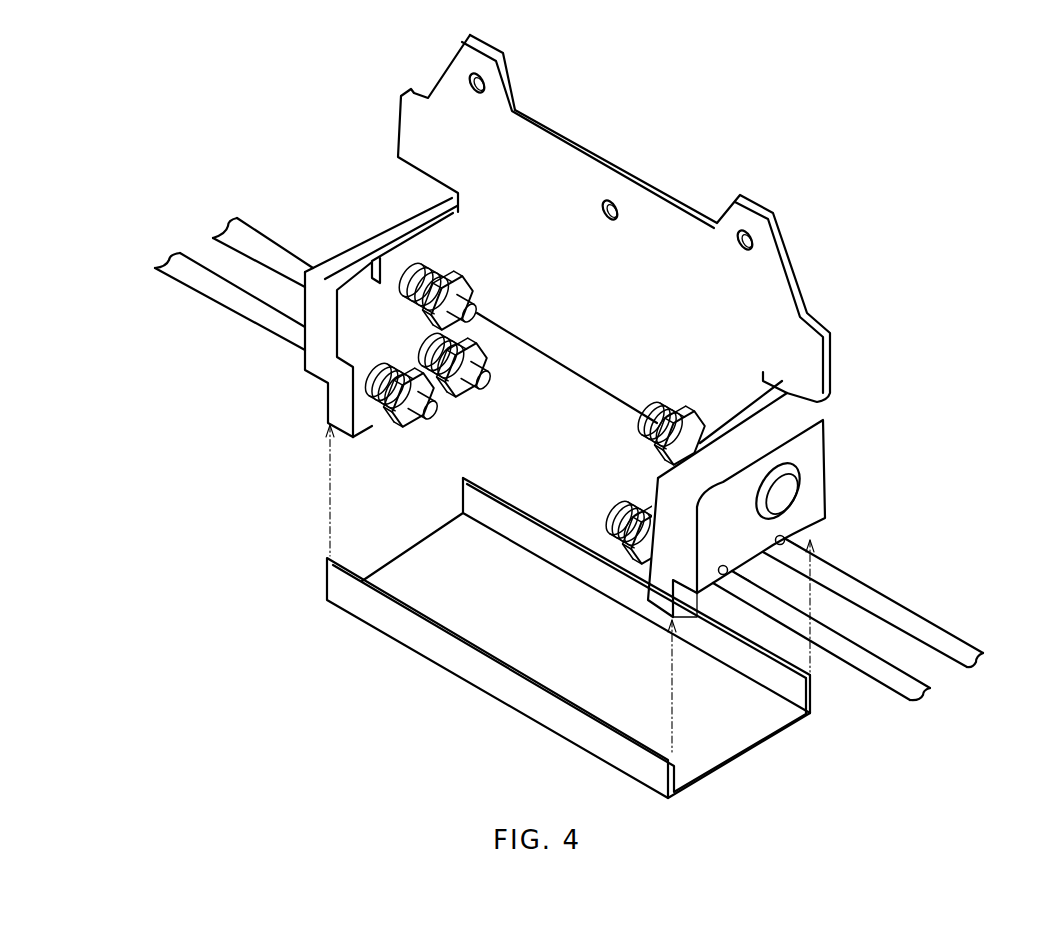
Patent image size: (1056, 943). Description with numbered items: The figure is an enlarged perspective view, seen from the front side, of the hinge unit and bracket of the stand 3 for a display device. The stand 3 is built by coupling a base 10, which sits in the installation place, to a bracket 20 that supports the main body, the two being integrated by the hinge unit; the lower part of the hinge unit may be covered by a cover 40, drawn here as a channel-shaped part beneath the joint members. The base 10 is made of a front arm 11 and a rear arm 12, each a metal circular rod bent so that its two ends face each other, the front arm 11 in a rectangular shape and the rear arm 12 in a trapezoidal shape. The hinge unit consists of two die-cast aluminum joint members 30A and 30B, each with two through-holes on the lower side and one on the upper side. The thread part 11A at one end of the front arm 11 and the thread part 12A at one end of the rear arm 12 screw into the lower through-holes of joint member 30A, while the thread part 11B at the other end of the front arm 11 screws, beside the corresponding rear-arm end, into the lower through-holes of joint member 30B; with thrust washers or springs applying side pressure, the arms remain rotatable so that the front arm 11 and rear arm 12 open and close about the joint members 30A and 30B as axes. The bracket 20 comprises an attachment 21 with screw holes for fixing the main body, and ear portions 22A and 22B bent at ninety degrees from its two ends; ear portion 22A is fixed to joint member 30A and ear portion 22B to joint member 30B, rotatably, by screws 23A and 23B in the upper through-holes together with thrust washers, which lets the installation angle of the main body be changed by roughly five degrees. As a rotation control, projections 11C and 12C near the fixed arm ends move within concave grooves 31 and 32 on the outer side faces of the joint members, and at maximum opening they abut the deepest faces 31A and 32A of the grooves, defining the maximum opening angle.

The stand 3 is at (841, 137).
The base 10 is at (596, 441).
The front arm 11 is at (183, 263).
The rear arm 12 is at (278, 255).
The thread part 11A is at (433, 413).
The thread part 12A is at (487, 384).
The thread part 11B is at (627, 514).
The projection 11C is at (835, 603).
The projection 12C is at (810, 547).
The bracket 20 is at (614, 229).
The attachment 21 is at (637, 210).
The ear portion 22A is at (427, 245).
The ear portion 22B is at (730, 410).
The screw 23A is at (478, 321).
The screw 23B is at (657, 428).
The joint member 30A is at (407, 220).
The joint member 30B is at (810, 422).
The concave groove 31 is at (810, 692).
The deepest face 31A is at (801, 574).
The concave groove 32 is at (817, 521).
The deepest face 32A is at (800, 507).
The cover 40 is at (425, 643).